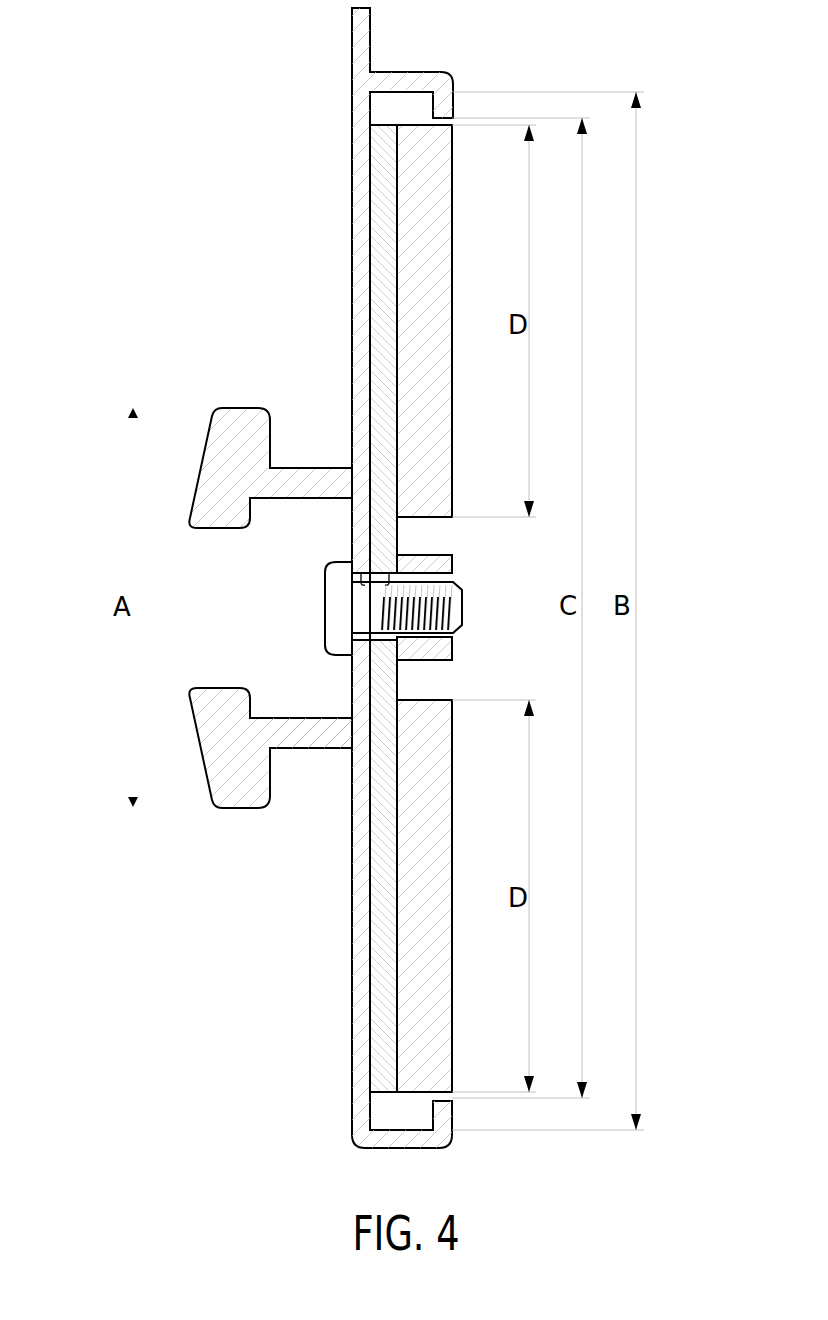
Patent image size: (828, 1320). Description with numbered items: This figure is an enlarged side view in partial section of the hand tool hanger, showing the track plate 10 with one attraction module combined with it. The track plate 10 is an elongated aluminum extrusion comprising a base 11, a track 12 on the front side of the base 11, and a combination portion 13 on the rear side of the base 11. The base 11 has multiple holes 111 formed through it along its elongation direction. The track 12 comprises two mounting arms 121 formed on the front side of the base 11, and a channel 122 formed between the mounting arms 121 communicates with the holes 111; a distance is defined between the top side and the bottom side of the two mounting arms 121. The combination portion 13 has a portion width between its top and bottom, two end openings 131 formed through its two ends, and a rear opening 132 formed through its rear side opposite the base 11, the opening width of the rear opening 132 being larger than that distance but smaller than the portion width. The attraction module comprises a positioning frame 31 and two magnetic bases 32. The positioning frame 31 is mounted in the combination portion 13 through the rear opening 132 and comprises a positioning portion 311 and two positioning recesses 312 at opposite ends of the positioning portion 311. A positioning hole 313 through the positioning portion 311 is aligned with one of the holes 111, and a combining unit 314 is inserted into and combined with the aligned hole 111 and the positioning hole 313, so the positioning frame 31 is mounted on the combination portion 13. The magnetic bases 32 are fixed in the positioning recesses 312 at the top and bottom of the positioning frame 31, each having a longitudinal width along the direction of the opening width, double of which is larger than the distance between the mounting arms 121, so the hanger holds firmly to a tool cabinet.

The track plate 10 is at (391, 593).
The base 11 is at (360, 35).
The track 12 is at (257, 586).
The combination portion 13 is at (432, 60).
The positioning frame 31 is at (378, 623).
The magnetic base 32 is at (435, 410).
The hole 111 is at (354, 590).
The mounting arm 121 is at (247, 423).
The channel 122 is at (353, 685).
The end opening 131 is at (400, 1122).
The rear opening 132 is at (447, 1095).
The positioning portion 311 is at (398, 545).
The positioning recess 312 is at (405, 220).
The positioning hole 313 is at (400, 592).
The combining unit 314 is at (340, 615).